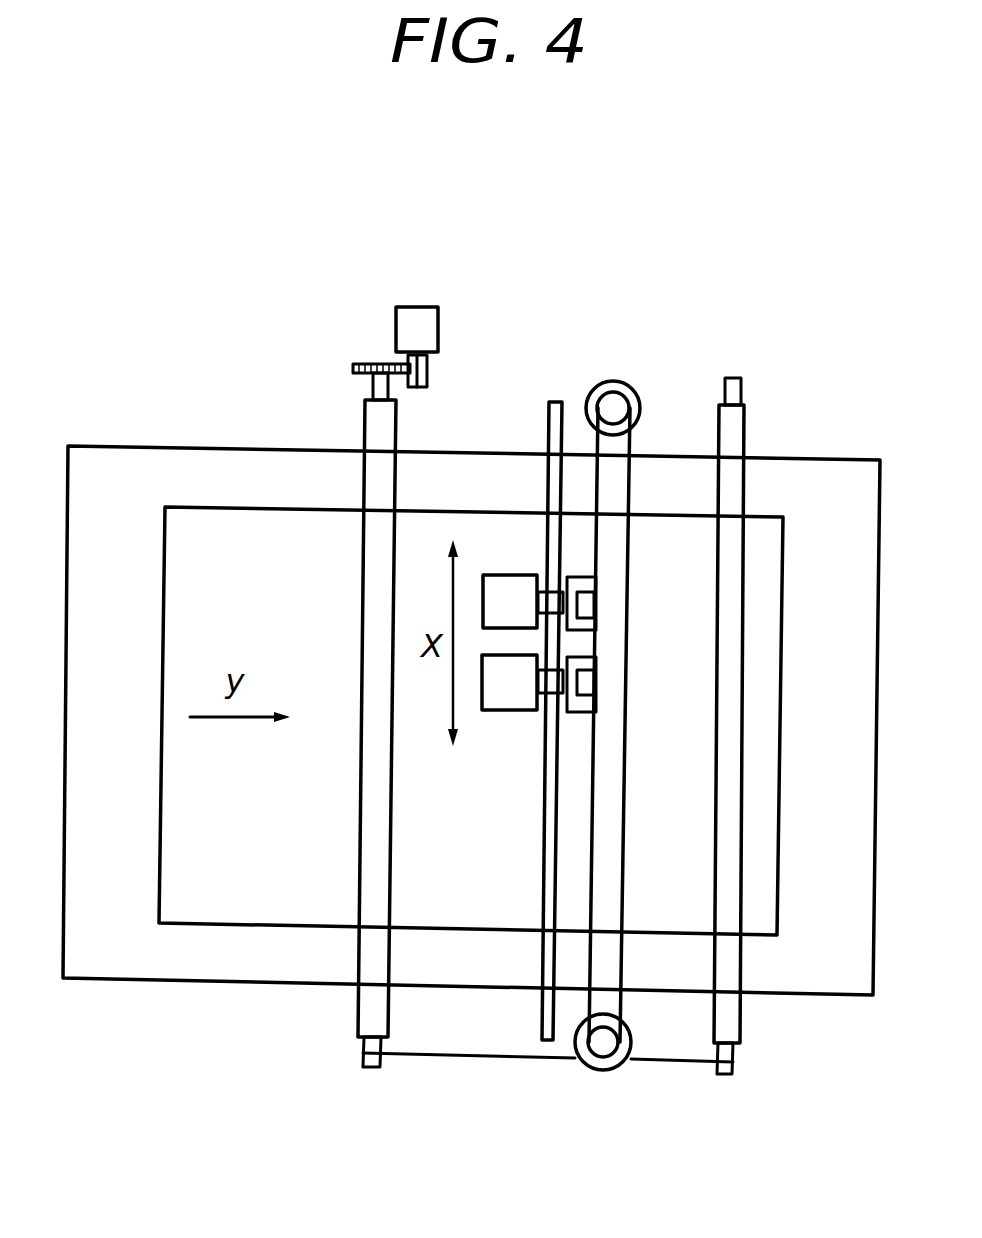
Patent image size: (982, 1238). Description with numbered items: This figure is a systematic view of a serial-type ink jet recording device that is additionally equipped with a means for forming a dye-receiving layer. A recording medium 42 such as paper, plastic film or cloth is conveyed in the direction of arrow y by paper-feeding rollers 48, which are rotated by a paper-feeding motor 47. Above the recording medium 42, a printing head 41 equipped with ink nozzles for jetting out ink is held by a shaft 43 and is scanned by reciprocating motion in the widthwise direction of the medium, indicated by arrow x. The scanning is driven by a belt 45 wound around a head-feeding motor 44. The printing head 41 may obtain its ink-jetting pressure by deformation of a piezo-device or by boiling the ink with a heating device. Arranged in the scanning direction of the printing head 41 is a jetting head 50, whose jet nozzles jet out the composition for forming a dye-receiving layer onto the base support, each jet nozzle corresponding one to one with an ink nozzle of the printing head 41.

The printing head 41 is at (500, 687).
The recording medium 42 is at (223, 548).
The shaft 43 is at (561, 400).
The head-feeding motor 44 is at (613, 381).
The belt 45 is at (630, 470).
The paper-feeding motor 47 is at (412, 322).
The paper-feeding rollers 48 is at (372, 437).
The jetting head 50 is at (510, 583).